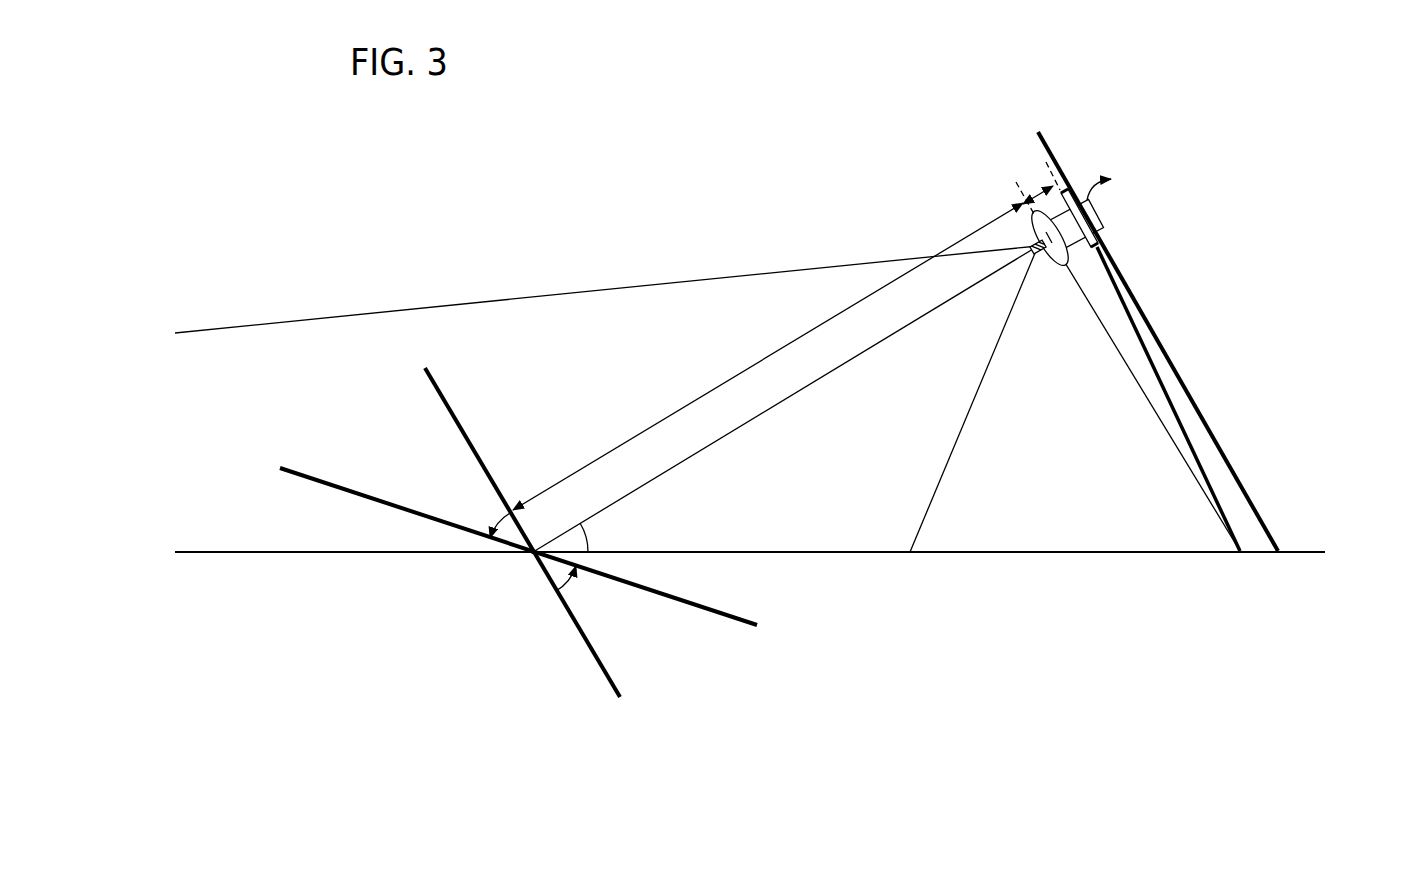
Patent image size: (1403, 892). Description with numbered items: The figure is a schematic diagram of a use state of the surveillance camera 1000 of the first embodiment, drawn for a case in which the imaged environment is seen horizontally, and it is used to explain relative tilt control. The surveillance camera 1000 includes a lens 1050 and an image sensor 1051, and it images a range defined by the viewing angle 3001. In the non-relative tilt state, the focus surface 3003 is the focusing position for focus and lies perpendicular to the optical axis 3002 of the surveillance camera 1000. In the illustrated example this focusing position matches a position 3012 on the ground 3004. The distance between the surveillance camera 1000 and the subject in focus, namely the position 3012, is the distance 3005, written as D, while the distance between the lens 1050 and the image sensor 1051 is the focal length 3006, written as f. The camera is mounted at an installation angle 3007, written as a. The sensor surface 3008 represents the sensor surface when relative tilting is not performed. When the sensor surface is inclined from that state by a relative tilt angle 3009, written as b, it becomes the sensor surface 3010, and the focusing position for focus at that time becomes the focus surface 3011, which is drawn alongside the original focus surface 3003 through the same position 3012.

The surveillance camera 1000 is at (1100, 208).
The lens 1050 is at (1064, 268).
The image sensor 1051 is at (1068, 200).
The viewing angle 3001 is at (1035, 252).
The optical axis 3002 is at (798, 392).
The focus surface 3003 is at (592, 648).
The ground 3004 is at (1087, 552).
The distance 3005 is at (748, 330).
The focal length 3006 is at (1026, 168).
The installation angle 3007 is at (583, 525).
The sensor surface 3008 is at (1221, 452).
The relative tilt angle 3009 is at (1165, 393).
The sensor surface 3010 is at (1183, 438).
The focus surface 3011 is at (727, 617).
The position 3012 is at (533, 552).